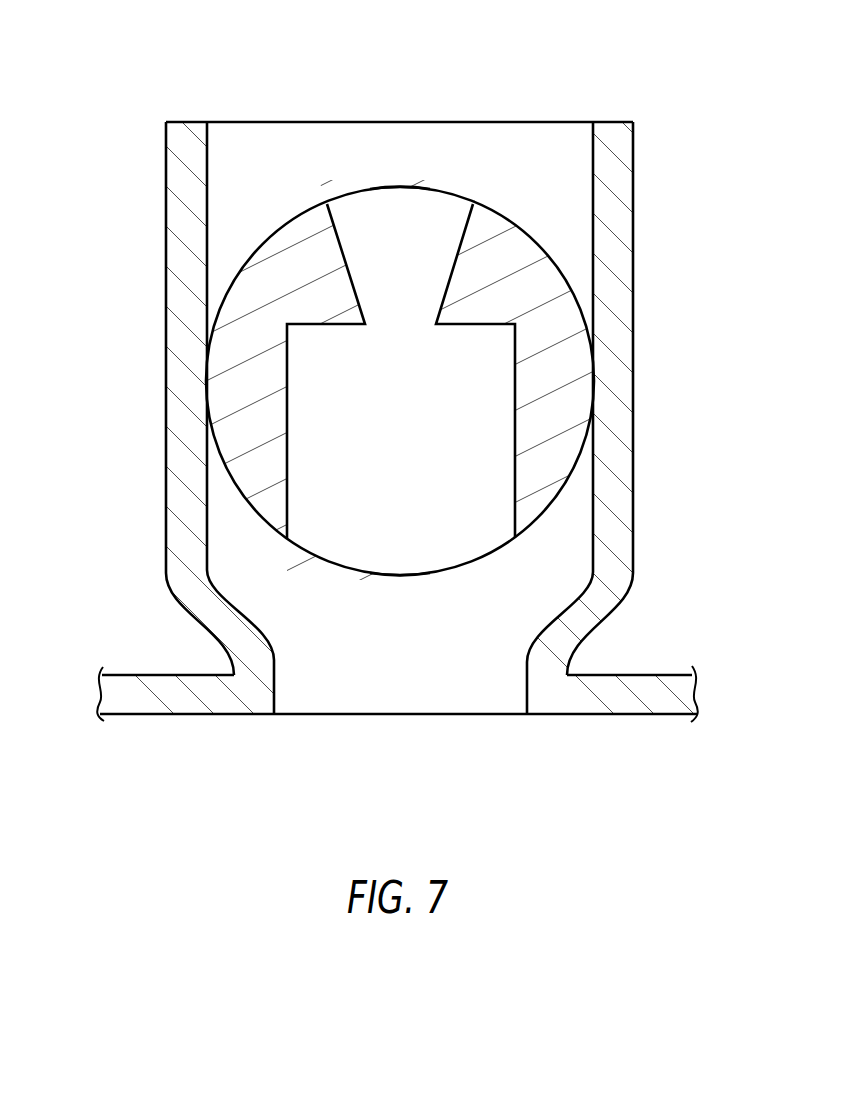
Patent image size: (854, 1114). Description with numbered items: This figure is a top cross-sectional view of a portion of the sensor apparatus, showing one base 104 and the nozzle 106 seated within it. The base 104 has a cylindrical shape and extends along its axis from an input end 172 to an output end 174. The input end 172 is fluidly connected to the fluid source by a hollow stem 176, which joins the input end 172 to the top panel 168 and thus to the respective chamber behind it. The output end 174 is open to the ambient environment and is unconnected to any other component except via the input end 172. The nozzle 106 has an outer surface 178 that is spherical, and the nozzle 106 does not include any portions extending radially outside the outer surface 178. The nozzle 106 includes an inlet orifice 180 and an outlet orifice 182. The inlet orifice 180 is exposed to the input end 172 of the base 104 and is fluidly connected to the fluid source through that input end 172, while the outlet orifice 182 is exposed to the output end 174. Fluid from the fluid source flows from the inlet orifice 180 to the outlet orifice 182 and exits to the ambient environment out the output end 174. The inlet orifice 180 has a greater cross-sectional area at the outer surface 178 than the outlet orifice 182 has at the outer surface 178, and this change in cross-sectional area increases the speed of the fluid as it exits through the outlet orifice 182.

The base 104 is at (626, 415).
The nozzle 106 is at (553, 330).
The top panel 168 is at (653, 675).
The input end 172 is at (197, 582).
The output end 174 is at (183, 122).
The hollow stem 176 is at (228, 630).
The outer surface 178 is at (547, 248).
The inlet orifice 180 is at (420, 575).
The outlet orifice 182 is at (402, 187).